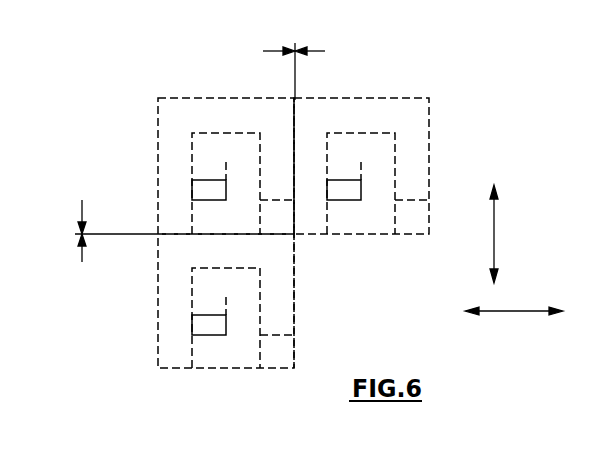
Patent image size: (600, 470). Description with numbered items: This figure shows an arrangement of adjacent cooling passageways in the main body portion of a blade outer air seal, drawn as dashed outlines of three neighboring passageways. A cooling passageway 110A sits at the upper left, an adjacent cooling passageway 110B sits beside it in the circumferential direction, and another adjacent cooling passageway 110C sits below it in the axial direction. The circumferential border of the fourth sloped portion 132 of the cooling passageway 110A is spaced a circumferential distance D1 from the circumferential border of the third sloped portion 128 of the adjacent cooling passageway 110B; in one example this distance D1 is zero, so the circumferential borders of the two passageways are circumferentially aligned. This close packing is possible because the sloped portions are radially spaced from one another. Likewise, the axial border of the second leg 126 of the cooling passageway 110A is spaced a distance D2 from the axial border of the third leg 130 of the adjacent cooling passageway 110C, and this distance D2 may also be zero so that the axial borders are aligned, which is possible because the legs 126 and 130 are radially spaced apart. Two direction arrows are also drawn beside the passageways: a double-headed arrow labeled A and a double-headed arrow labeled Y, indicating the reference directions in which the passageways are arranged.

The cooling passageway 110A is at (216, 98).
The adjacent cooling passageway 110B is at (345, 201).
The adjacent cooling passageway 110C is at (238, 370).
The second leg 126 is at (203, 217).
The third sloped portion 128 is at (309, 168).
The third leg 130 is at (210, 254).
The fourth sloped portion 132 is at (281, 168).
The circumferential distance D1 is at (325, 51).
The circumferential distance D2 is at (82, 210).
The axis direction A is at (494, 237).
The Y axis direction Y is at (513, 311).